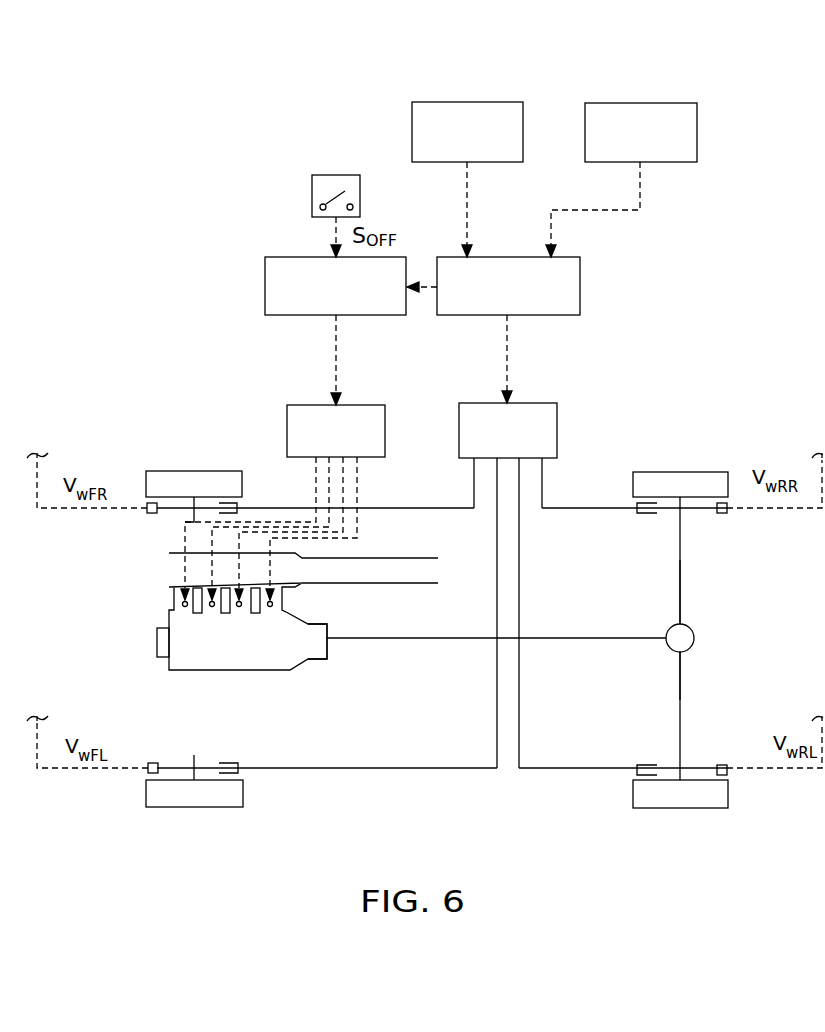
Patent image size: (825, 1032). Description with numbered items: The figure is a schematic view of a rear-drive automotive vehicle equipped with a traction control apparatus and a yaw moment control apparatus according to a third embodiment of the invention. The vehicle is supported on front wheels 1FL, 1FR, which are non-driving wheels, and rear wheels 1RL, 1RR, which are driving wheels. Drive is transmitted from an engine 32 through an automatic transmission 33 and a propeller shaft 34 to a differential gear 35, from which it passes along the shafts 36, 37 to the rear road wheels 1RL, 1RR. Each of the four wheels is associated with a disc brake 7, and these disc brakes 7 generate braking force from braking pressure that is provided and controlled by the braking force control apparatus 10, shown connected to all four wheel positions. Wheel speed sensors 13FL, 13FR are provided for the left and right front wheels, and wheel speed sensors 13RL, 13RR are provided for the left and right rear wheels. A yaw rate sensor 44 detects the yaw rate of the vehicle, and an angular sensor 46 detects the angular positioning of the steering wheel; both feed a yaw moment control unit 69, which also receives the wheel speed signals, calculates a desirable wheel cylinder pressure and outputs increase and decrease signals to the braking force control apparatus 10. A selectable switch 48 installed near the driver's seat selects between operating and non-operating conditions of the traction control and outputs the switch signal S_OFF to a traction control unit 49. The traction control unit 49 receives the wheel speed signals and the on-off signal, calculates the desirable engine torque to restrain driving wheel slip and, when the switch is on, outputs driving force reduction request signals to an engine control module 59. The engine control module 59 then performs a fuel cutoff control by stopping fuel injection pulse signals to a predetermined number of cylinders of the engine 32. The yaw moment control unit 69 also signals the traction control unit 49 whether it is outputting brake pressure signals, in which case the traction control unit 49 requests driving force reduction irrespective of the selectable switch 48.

The yaw rate sensor 44 is at (500, 102).
The angular sensor 46 is at (657, 103).
The selectable switch 48 is at (352, 175).
The traction control unit 49 is at (282, 257).
The yaw moment control unit 69 is at (580, 282).
The engine control module 59 is at (300, 405).
The braking force control apparatus 10 is at (542, 403).
The front right road wheel 1FR is at (198, 477).
The rear right road wheel 1RR is at (688, 477).
The front left road wheel 1FL is at (235, 796).
The rear left road wheel 1RL is at (633, 796).
The disc brake 7 is at (237, 506).
The front right wheel speed sensor 13FR is at (152, 514).
The rear right wheel speed sensor 13RR is at (722, 514).
The front left wheel speed sensor 13FL is at (153, 763).
The rear left wheel speed sensor 13RL is at (724, 765).
The engine 32 is at (203, 672).
The automatic transmission 33 is at (318, 662).
The propeller shaft 34 is at (590, 638).
The differential gear 35 is at (695, 640).
The rear right drive shaft 36 is at (683, 590).
The rear left drive shaft 37 is at (683, 672).